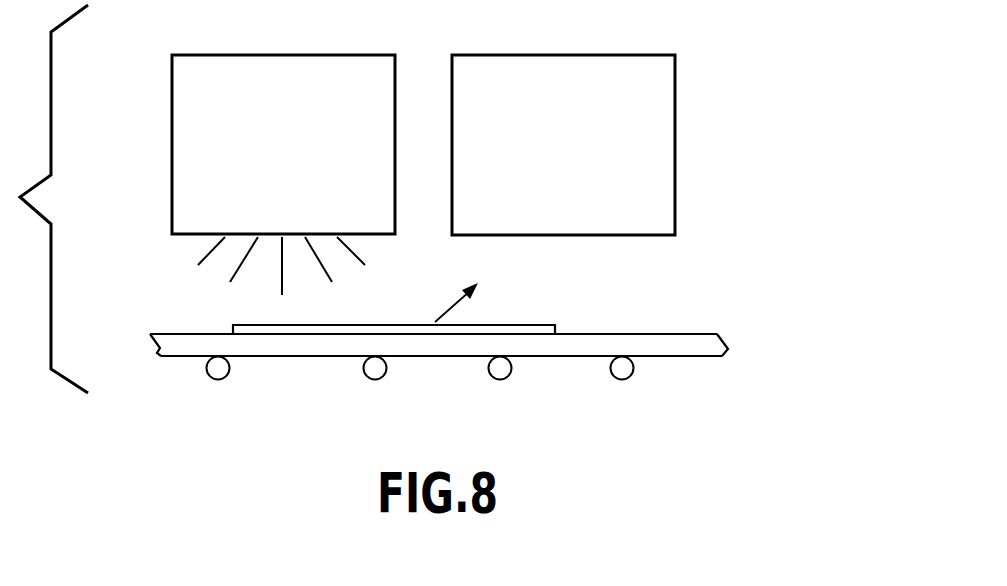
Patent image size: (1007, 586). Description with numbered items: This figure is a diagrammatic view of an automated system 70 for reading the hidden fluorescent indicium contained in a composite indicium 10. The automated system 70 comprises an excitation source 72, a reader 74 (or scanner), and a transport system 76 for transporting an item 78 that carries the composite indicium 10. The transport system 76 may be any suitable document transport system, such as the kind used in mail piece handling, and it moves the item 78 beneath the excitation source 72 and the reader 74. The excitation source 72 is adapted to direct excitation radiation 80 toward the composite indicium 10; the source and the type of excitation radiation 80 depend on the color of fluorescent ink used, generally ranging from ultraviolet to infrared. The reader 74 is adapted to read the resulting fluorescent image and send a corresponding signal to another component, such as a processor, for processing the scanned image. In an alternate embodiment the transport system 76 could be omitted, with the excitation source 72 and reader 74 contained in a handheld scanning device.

The automated system 70 is at (775, 82).
The excitation source 72 is at (172, 173).
The reader 74 is at (675, 168).
The excitation radiation 80 is at (210, 257).
The item 78 is at (545, 346).
The transport system 76 is at (371, 379).
The composite indicium 10 is at (548, 331).